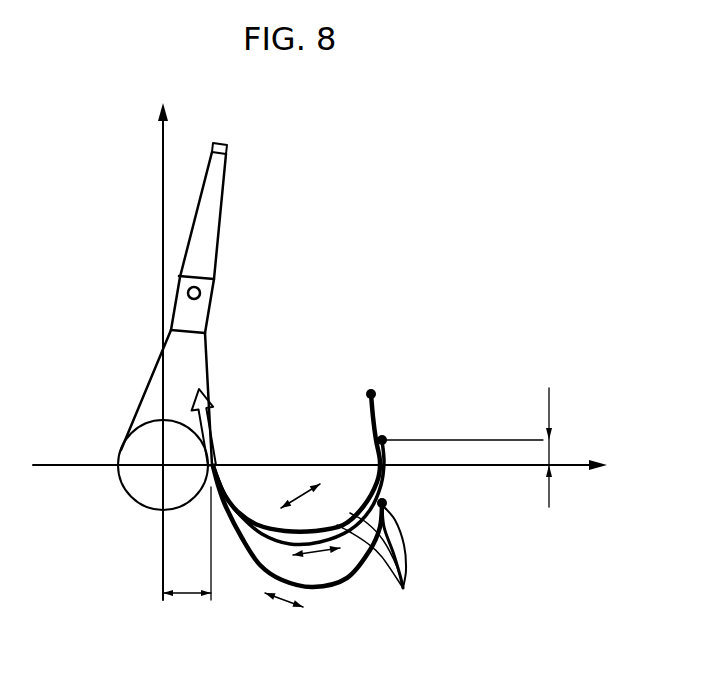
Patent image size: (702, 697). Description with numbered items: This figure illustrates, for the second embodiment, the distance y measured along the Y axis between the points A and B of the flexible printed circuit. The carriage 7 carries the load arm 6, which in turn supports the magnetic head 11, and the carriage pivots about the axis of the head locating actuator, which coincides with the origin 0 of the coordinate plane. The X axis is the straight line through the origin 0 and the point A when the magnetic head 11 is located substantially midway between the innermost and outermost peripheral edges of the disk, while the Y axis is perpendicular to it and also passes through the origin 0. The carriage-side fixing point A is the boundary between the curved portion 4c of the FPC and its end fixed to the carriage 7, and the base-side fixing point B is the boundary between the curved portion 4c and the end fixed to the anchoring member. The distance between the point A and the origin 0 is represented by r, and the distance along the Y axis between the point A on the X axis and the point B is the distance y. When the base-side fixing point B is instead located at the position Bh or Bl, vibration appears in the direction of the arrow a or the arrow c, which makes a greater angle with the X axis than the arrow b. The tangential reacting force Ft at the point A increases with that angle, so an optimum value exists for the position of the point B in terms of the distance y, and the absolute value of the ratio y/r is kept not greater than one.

The load arm 6 is at (210, 203).
The carriage 7 is at (148, 408).
The magnetic head 11 is at (216, 143).
The curved portion of the FPC 4c is at (380, 563).
The origin 0 is at (160, 467).
The carriage-side fixing point A is at (208, 468).
The base-side fixing point B is at (388, 433).
The position Bh of the base-side fixing point Bh is at (371, 394).
The position Bl of the base-side fixing point Bl is at (387, 500).
The reacting force component Ft is at (210, 425).
The arrow a is at (292, 508).
The arrow b is at (315, 553).
The arrow c is at (287, 603).
The distance r is at (187, 543).
The distance y is at (478, 447).
The X-axis X is at (320, 482).
The Y-axis Y is at (148, 351).